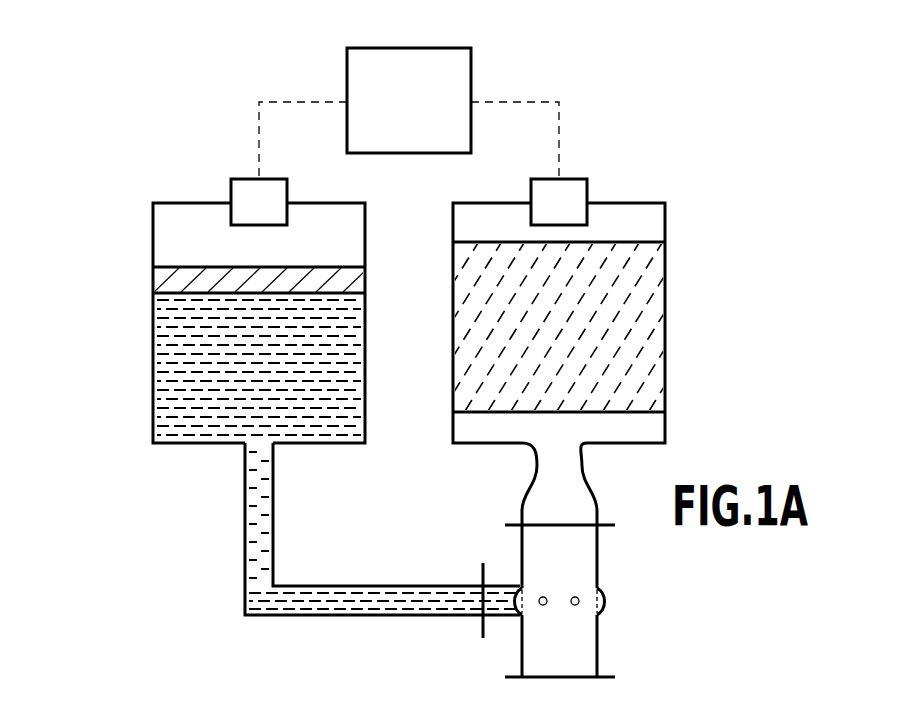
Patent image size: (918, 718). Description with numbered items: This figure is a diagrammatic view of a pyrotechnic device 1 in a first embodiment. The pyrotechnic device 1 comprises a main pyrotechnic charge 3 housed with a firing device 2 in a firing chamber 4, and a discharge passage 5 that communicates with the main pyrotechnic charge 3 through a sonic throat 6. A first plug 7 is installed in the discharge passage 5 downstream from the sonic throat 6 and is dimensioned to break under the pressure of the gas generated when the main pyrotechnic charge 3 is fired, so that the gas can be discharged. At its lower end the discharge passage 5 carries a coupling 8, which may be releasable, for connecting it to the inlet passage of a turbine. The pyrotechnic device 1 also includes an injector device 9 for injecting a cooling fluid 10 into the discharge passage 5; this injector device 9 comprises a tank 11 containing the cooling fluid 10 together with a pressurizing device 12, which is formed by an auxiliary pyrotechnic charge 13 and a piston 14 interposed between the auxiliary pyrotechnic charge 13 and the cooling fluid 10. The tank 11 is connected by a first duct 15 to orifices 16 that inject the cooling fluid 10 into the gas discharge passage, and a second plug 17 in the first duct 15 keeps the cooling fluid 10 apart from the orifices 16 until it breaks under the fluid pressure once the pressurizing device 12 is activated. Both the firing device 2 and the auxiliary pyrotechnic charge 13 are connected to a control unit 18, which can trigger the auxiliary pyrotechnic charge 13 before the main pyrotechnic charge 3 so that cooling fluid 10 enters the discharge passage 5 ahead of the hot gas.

The pyrotechnic device 1 is at (662, 93).
The firing device 2 is at (572, 186).
The main pyrotechnic charge 3 is at (637, 334).
The firing chamber 4 is at (648, 427).
The discharge passage 5 is at (578, 642).
The sonic throat 6 is at (583, 457).
The first plug 7 is at (577, 527).
The coupling 8 is at (510, 677).
The injector device 9 is at (344, 529).
The cooling fluid 10 is at (188, 389).
The tank 11 is at (153, 340).
The pressurizing device 12 is at (215, 323).
The auxiliary pyrotechnic charge 13 is at (242, 215).
The piston 14 is at (236, 283).
The first duct 15 is at (360, 587).
The orifices 16 is at (580, 600).
The second plug 17 is at (482, 600).
The control unit 18 is at (395, 116).